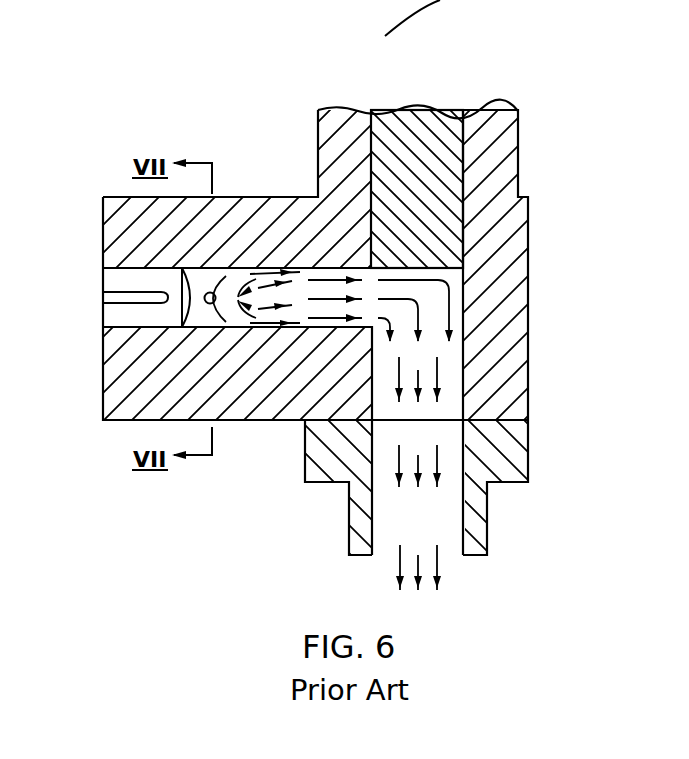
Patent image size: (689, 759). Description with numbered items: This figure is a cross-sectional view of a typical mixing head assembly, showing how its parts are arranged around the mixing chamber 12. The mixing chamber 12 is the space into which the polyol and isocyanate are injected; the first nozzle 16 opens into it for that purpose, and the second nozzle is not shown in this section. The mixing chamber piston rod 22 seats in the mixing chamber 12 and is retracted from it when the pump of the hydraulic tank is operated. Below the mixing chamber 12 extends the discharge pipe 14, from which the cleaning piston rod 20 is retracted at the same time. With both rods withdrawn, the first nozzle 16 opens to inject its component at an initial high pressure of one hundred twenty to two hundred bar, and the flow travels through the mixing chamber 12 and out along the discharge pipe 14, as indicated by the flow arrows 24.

The mixing chamber 12 is at (452, 393).
The discharge pipe 14 is at (397, 520).
The first nozzle 16 is at (205, 292).
The cleaning piston rod 20 is at (466, 148).
The mixing chamber piston rod 22 is at (137, 317).
The flow path 24 is at (297, 268).